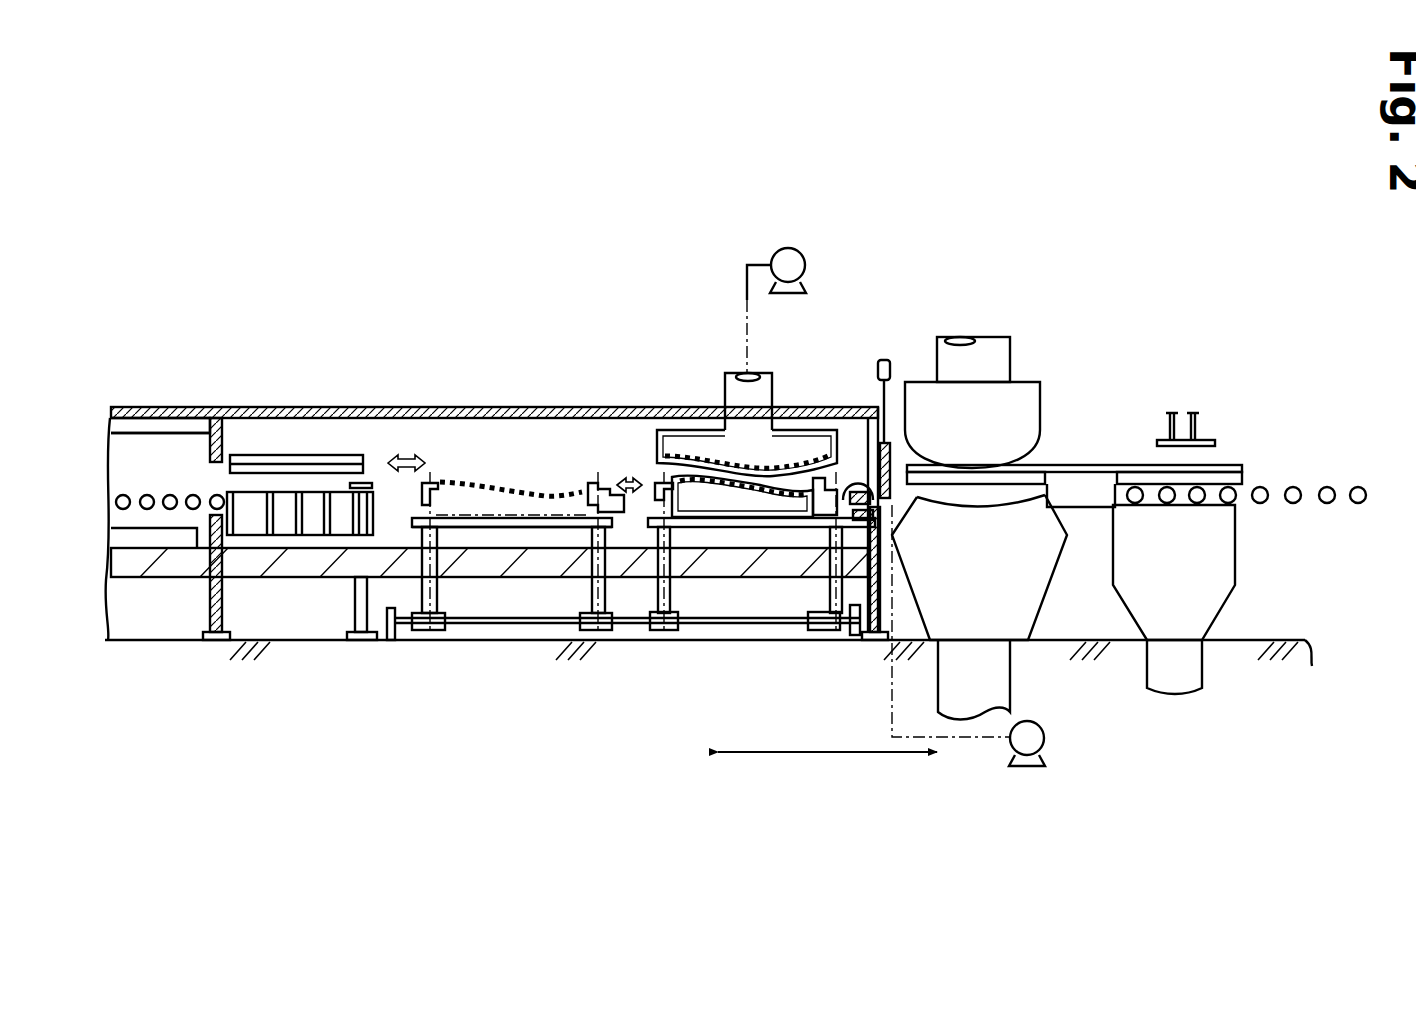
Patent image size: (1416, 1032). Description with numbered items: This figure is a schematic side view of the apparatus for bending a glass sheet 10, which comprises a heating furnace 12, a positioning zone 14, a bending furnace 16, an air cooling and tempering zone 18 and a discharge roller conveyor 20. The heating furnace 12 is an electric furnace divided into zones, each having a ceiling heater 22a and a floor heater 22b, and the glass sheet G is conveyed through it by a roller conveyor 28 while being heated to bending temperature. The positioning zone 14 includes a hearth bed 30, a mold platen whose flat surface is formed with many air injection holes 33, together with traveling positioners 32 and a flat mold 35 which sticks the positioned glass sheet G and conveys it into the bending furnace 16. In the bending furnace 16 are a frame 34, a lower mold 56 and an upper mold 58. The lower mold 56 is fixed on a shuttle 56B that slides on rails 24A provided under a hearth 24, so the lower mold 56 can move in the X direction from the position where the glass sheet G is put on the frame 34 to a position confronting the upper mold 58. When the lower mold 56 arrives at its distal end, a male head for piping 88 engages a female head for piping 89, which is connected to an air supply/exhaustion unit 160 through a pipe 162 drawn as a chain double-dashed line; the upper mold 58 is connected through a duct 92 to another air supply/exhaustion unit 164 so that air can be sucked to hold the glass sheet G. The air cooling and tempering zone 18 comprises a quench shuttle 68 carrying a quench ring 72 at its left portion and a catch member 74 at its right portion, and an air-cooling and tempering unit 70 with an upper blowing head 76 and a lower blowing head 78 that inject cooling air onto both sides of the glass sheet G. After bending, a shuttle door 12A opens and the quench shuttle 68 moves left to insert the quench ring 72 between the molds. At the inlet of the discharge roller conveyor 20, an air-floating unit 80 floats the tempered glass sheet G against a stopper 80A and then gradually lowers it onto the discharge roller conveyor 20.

The apparatus for bending a glass sheet 10 is at (860, 270).
The heating furnace 12 is at (156, 405).
The shuttle door 12A is at (895, 453).
The positioning zone 14 is at (341, 448).
The bending furnace 16 is at (592, 405).
The air cooling and tempering zone 18 is at (1022, 372).
The discharge roller conveyor 20 is at (1258, 480).
The ceiling heater 22a is at (194, 432).
The floor heater 22b is at (172, 532).
The hearth 24 is at (505, 578).
The rails 24A is at (646, 600).
The roller conveyor 28 is at (146, 510).
The hearth bed 30 is at (312, 520).
The traveling positioners 32 is at (366, 482).
The air injection holes 33 is at (283, 516).
The frame 34 is at (427, 484).
The flat mold 35 is at (308, 464).
The lower mold 56 is at (505, 484).
The shuttle 56B is at (412, 585).
The upper mold 58 is at (672, 446).
The quench shuttle 68 is at (1094, 465).
The air-cooling and tempering unit 70 is at (1046, 610).
The quench ring 72 is at (984, 500).
The catch member 74 is at (1206, 482).
The upper blowing head 76 is at (1015, 425).
The lower blowing head 78 is at (1022, 565).
The air-floating unit 80 is at (1215, 560).
The stopper 80A is at (1181, 420).
The male head for piping 88 is at (882, 476).
The female head for piping 89 is at (858, 514).
The duct 92 is at (750, 370).
The air supply/exhaustion unit 160 is at (1046, 742).
The pipe 162 is at (966, 740).
The air supply/exhaustion unit 164 is at (800, 256).
The glass sheet G is at (857, 474).
The X direction X is at (827, 772).